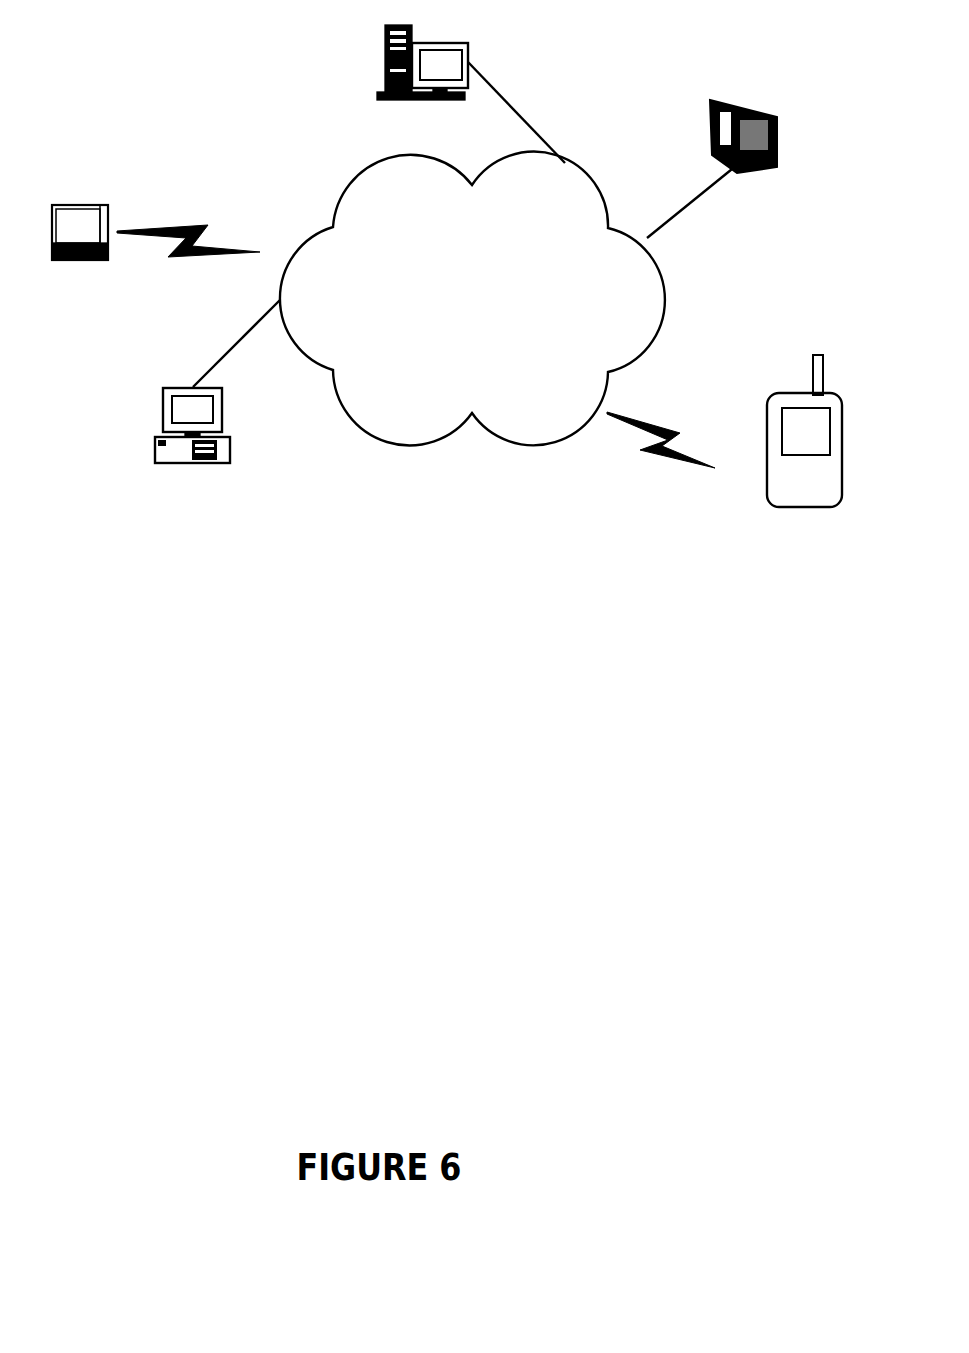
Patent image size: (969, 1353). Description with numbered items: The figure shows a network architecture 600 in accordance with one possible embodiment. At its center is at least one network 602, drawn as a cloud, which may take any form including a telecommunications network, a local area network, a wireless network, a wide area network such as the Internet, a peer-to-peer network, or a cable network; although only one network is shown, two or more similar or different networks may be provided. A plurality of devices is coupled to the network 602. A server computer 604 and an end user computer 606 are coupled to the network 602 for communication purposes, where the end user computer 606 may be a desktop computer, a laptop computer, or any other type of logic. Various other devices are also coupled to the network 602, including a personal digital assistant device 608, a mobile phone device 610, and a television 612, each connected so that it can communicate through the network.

The network architecture 600 is at (386, 737).
The network 602 is at (528, 445).
The server computer 604 is at (387, 65).
The end user computer 606 is at (155, 440).
The personal digital assistant (PDA) device 608 is at (80, 205).
The mobile phone device 610 is at (767, 435).
The television 612 is at (723, 92).